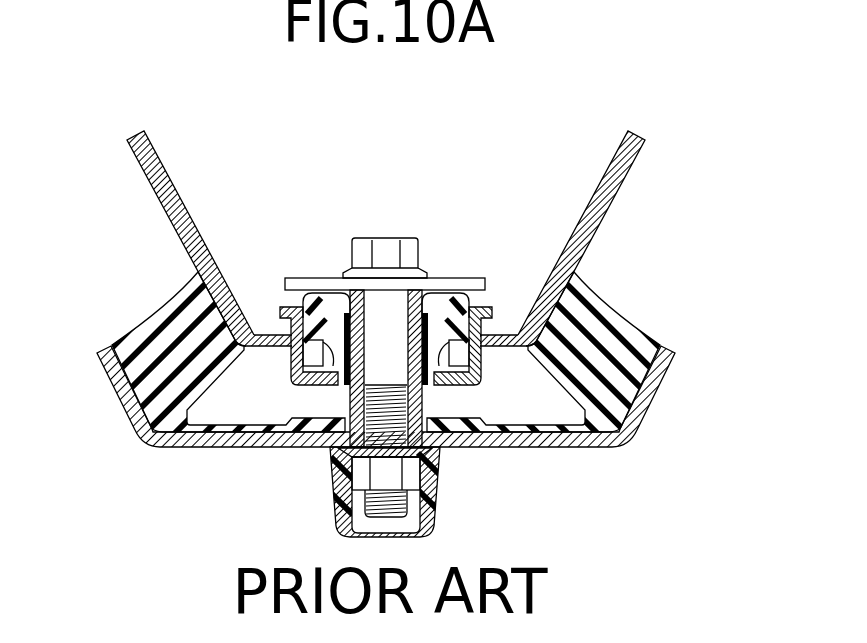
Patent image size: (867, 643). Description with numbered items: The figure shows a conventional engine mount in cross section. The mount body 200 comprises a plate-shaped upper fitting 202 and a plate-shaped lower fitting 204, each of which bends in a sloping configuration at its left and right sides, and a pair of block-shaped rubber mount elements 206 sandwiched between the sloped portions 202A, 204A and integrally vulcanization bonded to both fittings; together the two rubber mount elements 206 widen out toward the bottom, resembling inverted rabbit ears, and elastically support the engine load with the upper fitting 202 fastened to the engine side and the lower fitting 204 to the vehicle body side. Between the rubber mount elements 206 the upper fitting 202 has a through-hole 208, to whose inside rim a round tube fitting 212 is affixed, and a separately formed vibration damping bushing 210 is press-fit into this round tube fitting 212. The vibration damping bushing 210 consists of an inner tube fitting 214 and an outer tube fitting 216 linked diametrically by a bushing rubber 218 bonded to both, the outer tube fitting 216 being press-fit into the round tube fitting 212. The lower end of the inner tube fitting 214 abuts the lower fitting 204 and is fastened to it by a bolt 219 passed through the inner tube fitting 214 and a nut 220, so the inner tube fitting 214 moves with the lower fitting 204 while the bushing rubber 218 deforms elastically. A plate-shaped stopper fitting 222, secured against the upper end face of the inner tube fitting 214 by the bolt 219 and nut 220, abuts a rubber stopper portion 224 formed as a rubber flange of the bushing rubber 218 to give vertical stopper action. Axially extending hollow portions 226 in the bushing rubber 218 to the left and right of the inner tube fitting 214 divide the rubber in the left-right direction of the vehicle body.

The mount body 200 is at (206, 481).
The upper fitting 202 is at (172, 184).
The sloped portion of upper fitting 202A is at (198, 235).
The lower fitting 204 is at (250, 449).
The sloped portion of lower fitting 204A is at (118, 398).
The rubber mount element 206 is at (163, 323).
The through-hole 208 is at (318, 344).
The vibration damping bushing 210 is at (437, 281).
The round tube fitting 212 is at (474, 368).
The inner tube fitting 214 is at (418, 409).
The outer tube fitting 216 is at (283, 310).
The bushing rubber 218 is at (323, 304).
The bolt 219 is at (401, 327).
The nut 220 is at (412, 469).
The stopper fitting 222 is at (323, 283).
The rubber stopper portion 224 is at (478, 302).
The hollow portion 226 is at (332, 372).